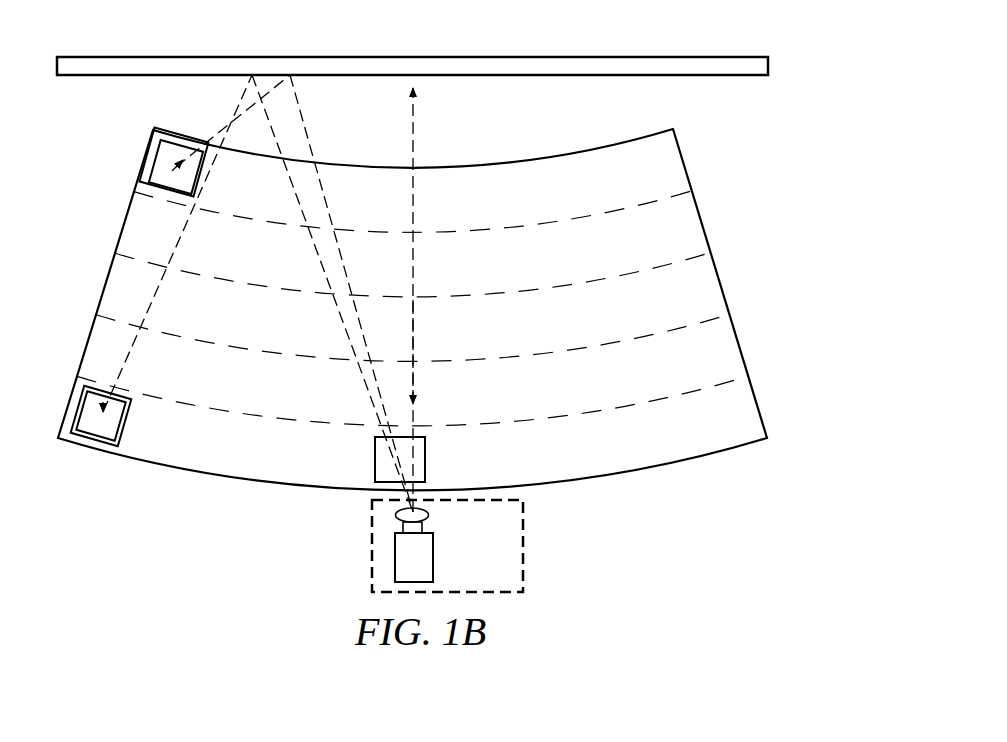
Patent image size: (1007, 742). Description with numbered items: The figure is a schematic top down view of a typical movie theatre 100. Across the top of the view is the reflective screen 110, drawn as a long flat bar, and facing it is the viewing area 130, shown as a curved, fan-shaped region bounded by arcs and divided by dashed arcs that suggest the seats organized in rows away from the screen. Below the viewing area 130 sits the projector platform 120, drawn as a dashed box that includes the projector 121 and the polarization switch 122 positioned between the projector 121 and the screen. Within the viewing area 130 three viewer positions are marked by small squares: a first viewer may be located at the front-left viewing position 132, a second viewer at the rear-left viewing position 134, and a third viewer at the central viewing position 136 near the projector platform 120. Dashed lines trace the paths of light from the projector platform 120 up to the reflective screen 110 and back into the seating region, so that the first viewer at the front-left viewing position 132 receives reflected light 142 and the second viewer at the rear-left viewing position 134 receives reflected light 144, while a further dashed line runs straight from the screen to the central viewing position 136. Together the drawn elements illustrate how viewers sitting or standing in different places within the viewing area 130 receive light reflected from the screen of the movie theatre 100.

The movie theatre 100 is at (623, 548).
The reflective screen 110 is at (772, 64).
The projector platform 120 is at (368, 567).
The projector 121 is at (434, 556).
The polarization switch 122 is at (431, 513).
The viewing area 130 is at (212, 482).
The front-left viewing position 132 is at (147, 160).
The rear-left viewing position 134 is at (130, 421).
The central viewing position 136 is at (375, 461).
The reflected light 142 is at (312, 138).
The reflected light 144 is at (310, 244).